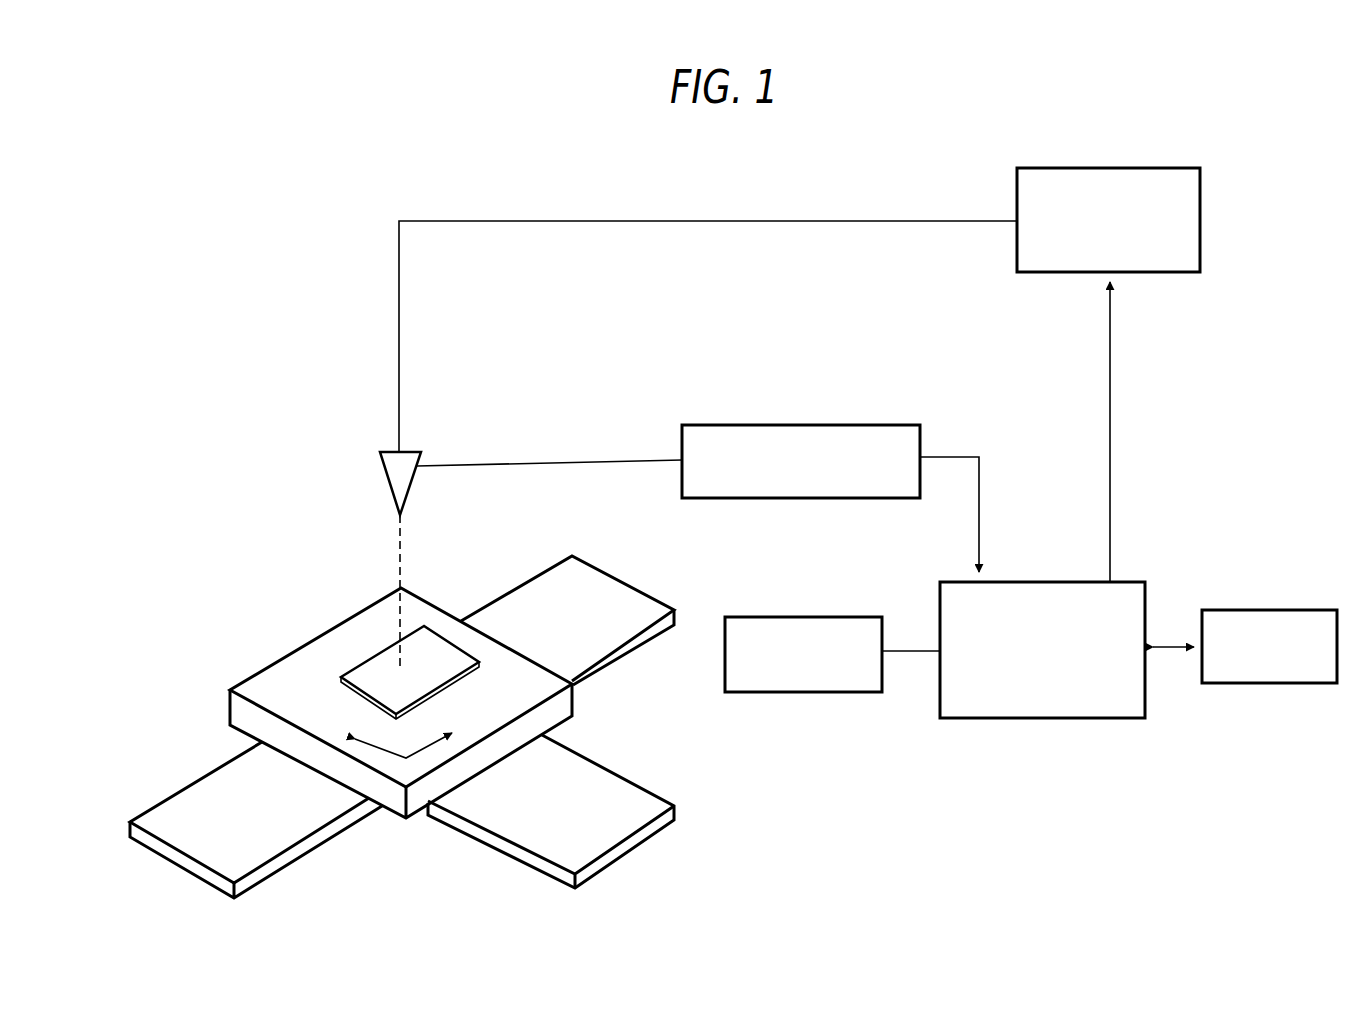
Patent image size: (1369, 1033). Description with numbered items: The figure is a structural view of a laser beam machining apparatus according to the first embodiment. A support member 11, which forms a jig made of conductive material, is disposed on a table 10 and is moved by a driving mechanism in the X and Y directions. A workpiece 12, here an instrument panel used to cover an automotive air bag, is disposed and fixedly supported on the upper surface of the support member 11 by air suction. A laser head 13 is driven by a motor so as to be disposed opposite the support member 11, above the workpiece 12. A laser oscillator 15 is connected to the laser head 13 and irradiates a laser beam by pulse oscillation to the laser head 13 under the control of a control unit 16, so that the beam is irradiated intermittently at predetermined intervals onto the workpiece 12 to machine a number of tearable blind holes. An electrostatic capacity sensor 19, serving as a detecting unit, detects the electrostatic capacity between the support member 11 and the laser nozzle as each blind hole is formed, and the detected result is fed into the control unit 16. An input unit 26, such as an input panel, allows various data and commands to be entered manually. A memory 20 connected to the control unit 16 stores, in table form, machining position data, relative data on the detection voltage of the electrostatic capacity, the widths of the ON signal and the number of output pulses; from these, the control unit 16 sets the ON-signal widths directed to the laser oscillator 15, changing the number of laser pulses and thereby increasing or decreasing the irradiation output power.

The table 10 is at (606, 788).
The support member 11 is at (230, 709).
The workpiece 12 is at (366, 682).
The laser head 13 is at (362, 479).
The laser oscillator 15 is at (1201, 214).
The control unit 16 is at (1040, 582).
The electrostatic capacity sensor 19 is at (800, 425).
The memory 20 is at (1268, 610).
The input unit 26 is at (800, 617).